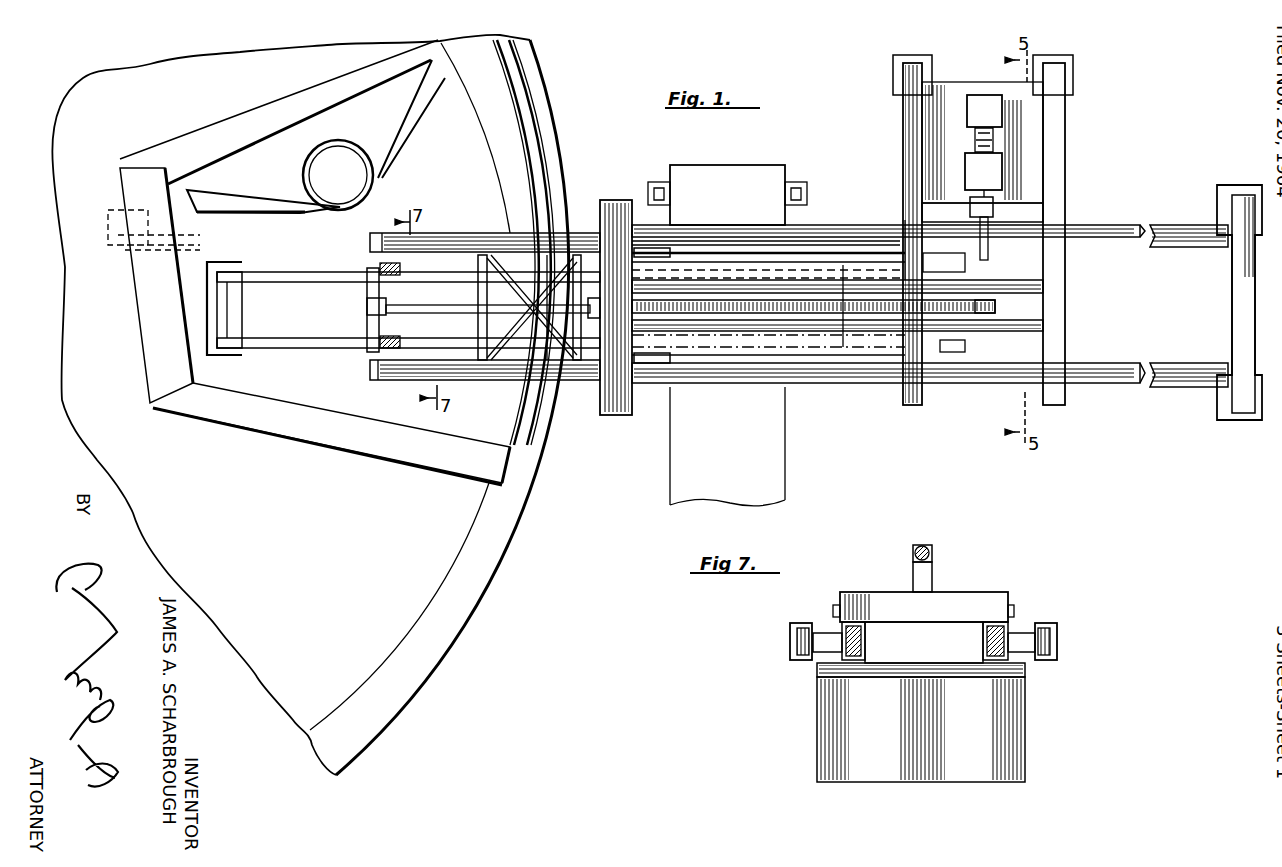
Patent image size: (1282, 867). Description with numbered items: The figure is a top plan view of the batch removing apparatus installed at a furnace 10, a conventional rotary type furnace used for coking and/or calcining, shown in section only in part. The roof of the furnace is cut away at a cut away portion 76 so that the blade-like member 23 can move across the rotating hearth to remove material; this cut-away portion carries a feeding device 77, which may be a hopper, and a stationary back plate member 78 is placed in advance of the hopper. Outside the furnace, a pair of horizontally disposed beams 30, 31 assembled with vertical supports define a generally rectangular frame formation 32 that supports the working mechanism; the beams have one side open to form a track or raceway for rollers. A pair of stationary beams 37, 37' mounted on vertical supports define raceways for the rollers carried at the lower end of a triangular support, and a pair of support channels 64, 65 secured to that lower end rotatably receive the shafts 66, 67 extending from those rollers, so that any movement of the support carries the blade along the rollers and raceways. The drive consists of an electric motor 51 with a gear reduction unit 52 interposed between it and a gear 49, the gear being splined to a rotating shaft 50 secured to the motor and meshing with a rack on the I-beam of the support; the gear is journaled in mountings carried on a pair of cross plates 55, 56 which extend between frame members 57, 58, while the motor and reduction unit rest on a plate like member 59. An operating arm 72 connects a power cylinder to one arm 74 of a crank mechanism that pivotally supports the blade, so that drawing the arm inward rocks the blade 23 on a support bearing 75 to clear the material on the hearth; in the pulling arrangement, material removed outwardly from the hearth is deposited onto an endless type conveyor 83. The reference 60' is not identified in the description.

In FIG. 1, the furnace 10 is at (242, 549).
In FIG. 1, the blade-like member 23 is at (243, 358).
In FIG. 7, the blade-like member 23 is at (895, 765).
In FIG. 1, the horizontal beam 30 is at (1178, 388).
In FIG. 1, the horizontal beam 31 is at (1152, 227).
In FIG. 1, the rectangular frame formation 32 is at (1244, 175).
In FIG. 1, the stationary beam 37 is at (485, 385).
In FIG. 7, the stationary beam 37 is at (1064, 627).
In FIG. 1, the stationary beam 37' is at (485, 228).
In FIG. 7, the stationary beam 37' is at (780, 627).
In FIG. 1, the gear 49 is at (990, 314).
In FIG. 1, the rotating shaft 50 is at (986, 259).
In FIG. 1, the electric motor 51 is at (980, 95).
In FIG. 1, the gear reduction unit 52 is at (1000, 175).
In FIG. 1, the cross plate 55 is at (1040, 330).
In FIG. 1, the cross plate 56 is at (1040, 283).
In FIG. 1, the frame member 57 is at (1066, 300).
In FIG. 1, the frame member 58 is at (900, 272).
In FIG. 1, the plate like member 59 is at (1030, 138).
In FIG. 1, the frame 60' is at (1001, 223).
In FIG. 7, the support channel 64 is at (983, 655).
In FIG. 7, the support channel 65 is at (865, 638).
In FIG. 7, the shaft 66 is at (1022, 633).
In FIG. 7, the shaft 67 is at (818, 633).
In FIG. 1, the operating arm 72 is at (424, 306).
In FIG. 7, the operating arm 72 is at (925, 546).
In FIG. 7, the crank arm 74 is at (935, 575).
In FIG. 7, the support bearing 75 is at (832, 608).
In FIG. 1, the cut away portion 76 is at (438, 188).
In FIG. 1, the feeding device 77 is at (380, 128).
In FIG. 1, the stationary back plate member 78 is at (358, 232).
In FIG. 1, the endless type conveyor 83 is at (787, 459).